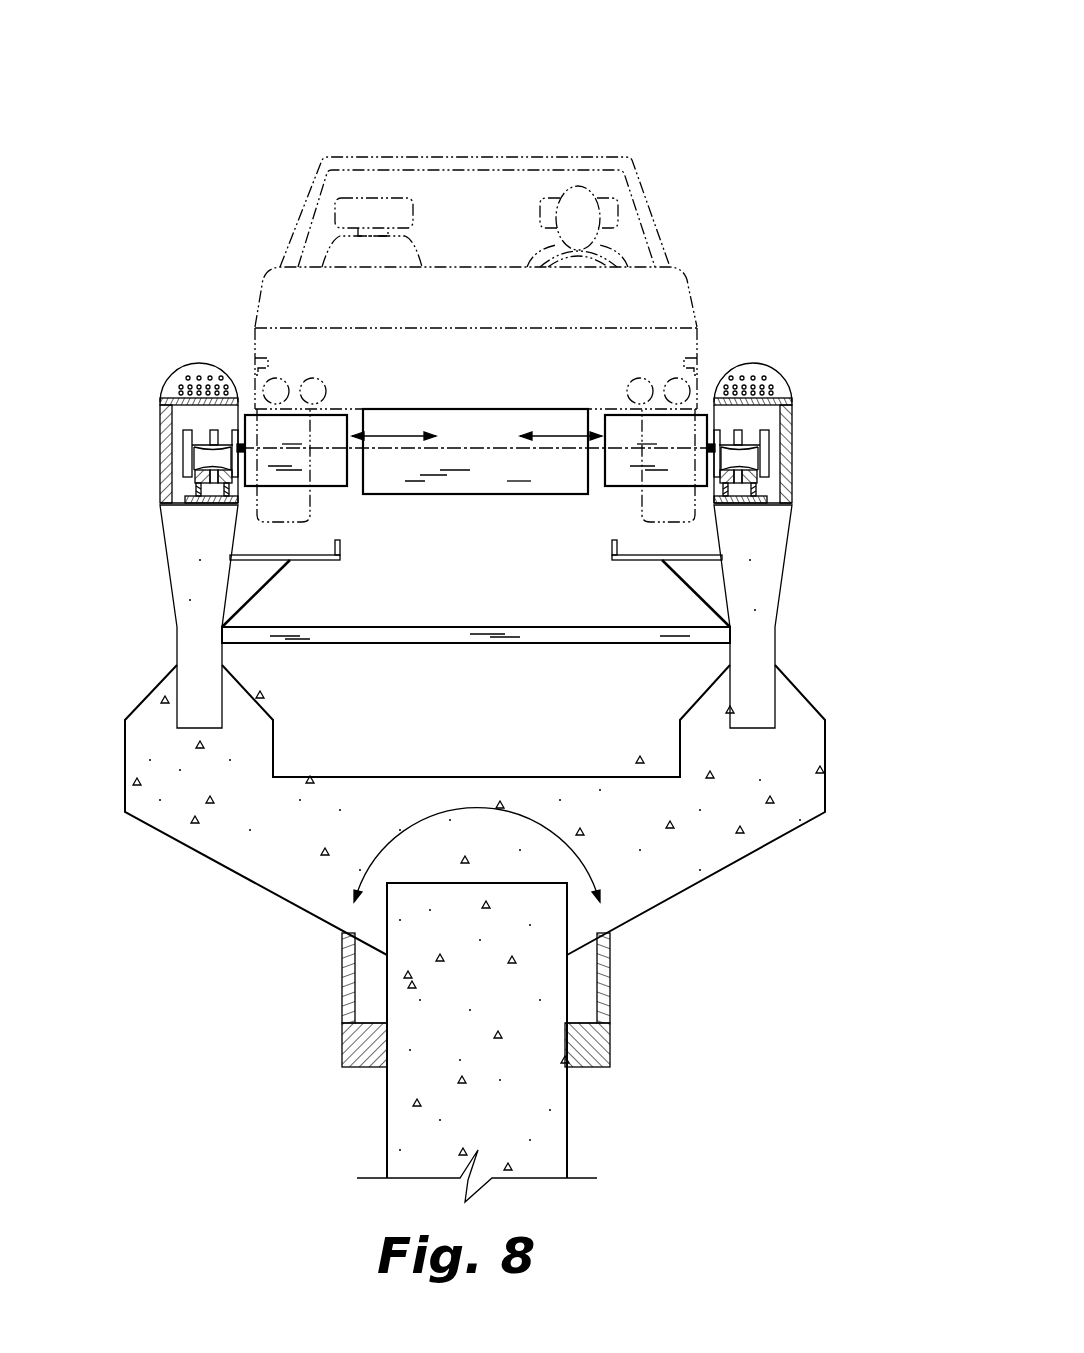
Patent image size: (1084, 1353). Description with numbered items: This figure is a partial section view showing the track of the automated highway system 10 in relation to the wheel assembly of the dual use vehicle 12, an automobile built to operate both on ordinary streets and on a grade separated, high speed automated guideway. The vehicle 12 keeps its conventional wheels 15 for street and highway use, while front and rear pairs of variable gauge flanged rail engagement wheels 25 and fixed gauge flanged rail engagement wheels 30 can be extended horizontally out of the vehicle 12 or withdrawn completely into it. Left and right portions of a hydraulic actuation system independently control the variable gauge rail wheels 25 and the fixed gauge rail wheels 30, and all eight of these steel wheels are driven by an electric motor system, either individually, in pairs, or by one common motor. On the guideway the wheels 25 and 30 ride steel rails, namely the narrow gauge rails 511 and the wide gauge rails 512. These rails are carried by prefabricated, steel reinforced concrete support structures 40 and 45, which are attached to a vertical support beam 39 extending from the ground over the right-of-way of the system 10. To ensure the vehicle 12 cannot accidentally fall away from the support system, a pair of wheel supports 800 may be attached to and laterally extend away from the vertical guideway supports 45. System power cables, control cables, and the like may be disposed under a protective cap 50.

The automated highway system 10 is at (861, 101).
The dual use vehicle 12 is at (491, 371).
The conventional wheels 15 is at (310, 522).
The variable gauge flanged rail engagement wheels 25 is at (183, 453).
The fixed gauge flanged rail engagement wheels 30 is at (207, 428).
The vertical support beam 39 is at (535, 983).
The concrete support structure 40 is at (125, 740).
The concrete support structure 45 is at (168, 575).
The protective cap 50 is at (168, 378).
The narrow gauge rails 511 is at (235, 558).
The wide gauge rails 512 is at (198, 485).
The wheel supports 800 is at (338, 560).